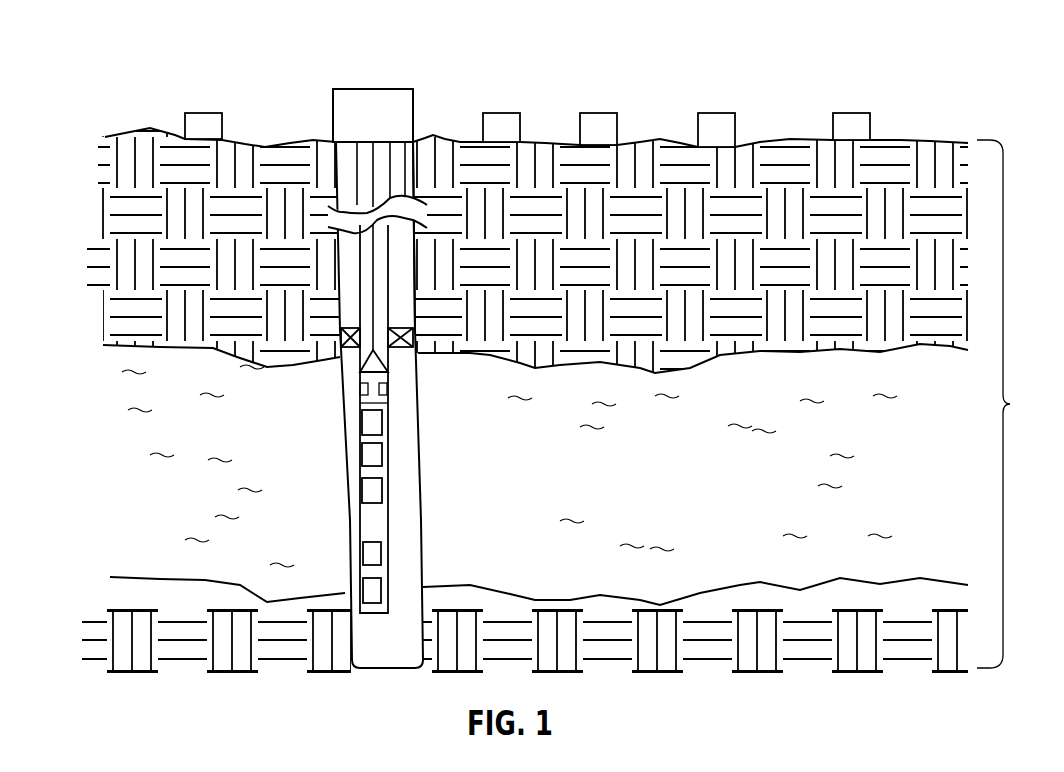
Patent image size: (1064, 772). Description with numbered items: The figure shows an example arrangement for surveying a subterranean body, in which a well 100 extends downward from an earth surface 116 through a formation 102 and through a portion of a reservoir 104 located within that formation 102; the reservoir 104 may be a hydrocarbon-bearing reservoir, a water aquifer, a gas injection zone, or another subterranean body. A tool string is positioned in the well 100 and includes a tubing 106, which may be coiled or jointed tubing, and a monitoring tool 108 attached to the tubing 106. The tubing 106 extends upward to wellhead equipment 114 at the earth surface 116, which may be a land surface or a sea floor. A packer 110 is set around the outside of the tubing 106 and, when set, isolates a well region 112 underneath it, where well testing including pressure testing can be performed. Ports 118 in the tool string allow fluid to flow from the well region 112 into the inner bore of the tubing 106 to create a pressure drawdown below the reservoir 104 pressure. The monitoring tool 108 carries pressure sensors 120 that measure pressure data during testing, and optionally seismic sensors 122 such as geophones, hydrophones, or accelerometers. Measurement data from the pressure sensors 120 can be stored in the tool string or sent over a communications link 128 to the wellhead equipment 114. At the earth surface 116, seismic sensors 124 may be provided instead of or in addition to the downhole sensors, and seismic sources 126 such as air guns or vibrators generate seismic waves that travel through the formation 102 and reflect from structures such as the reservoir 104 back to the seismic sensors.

The well 100 is at (414, 306).
The formation 102 is at (1017, 404).
The reservoir 104 is at (676, 501).
The tubing 106 is at (355, 290).
The monitoring tool 108 is at (356, 518).
The packer 110 is at (408, 350).
The well region 112 is at (416, 538).
The wellhead equipment 114 is at (413, 89).
The earth surface 116 is at (902, 140).
The ports 118 is at (387, 387).
The pressure sensors 120 is at (362, 452).
The seismic sensors 122 is at (362, 420).
The seismic sensors 124 is at (600, 113).
The seismic sources 126 is at (213, 113).
The communications link 128 is at (372, 300).